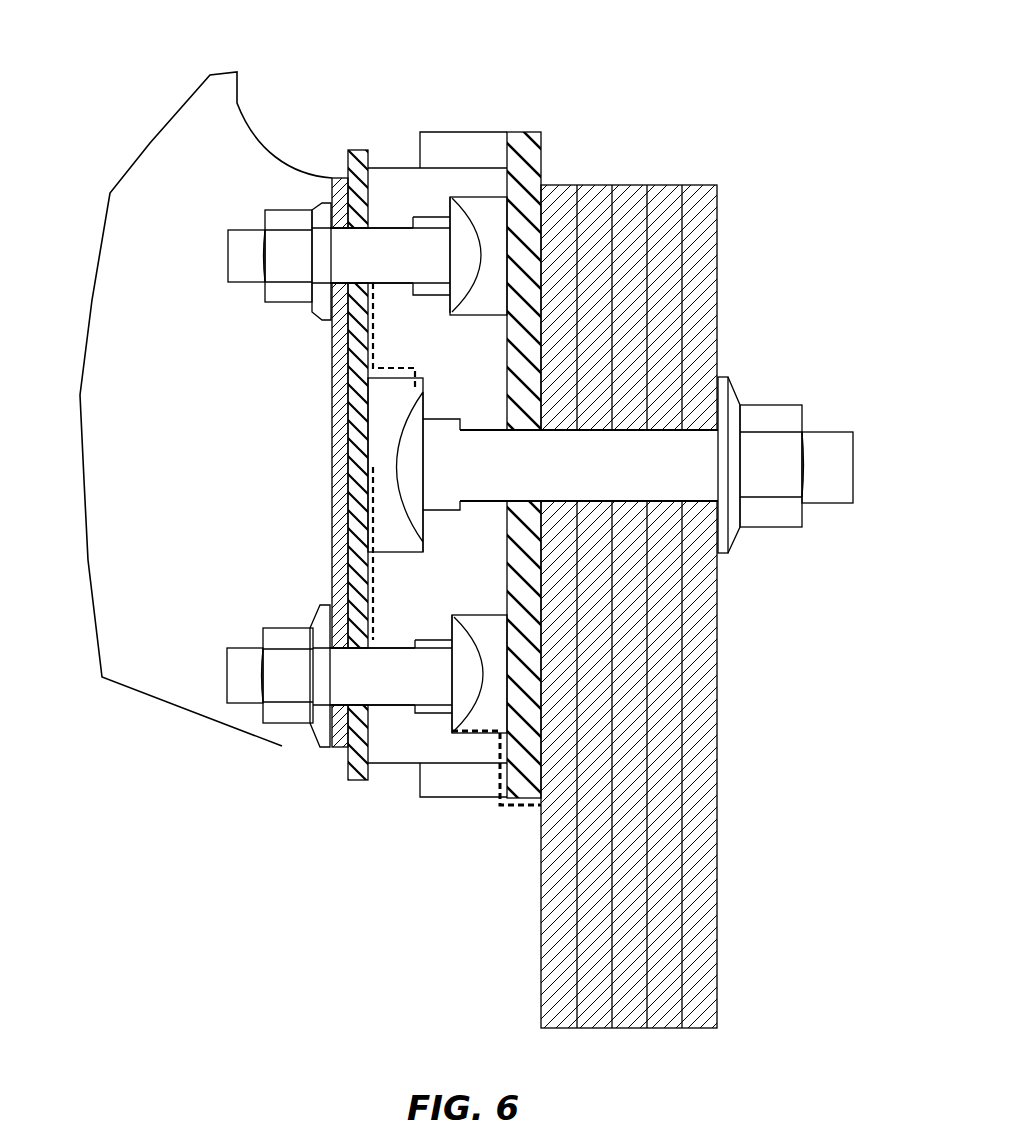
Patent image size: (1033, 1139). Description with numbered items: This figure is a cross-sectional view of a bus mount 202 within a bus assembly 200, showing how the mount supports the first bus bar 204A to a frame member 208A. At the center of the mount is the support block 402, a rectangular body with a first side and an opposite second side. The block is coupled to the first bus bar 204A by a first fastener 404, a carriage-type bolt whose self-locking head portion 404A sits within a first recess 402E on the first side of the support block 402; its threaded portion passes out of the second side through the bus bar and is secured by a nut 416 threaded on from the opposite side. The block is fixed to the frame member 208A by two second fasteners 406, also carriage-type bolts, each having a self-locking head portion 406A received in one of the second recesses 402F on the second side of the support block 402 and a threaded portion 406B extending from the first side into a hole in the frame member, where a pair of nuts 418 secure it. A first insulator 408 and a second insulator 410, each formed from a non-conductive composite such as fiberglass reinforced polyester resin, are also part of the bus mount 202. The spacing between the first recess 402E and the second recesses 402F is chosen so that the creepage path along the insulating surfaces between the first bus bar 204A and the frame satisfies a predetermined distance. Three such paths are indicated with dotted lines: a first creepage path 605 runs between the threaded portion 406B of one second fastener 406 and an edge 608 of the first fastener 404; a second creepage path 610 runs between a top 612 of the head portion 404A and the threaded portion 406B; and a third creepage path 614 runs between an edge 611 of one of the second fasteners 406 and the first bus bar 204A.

The mounting assembly 200 is at (662, 80).
The bus mount 202 is at (485, 110).
The first bus bar 204A is at (718, 190).
The housing 208A is at (152, 148).
The support block 402 is at (402, 167).
The first recess 402E is at (395, 532).
The second recesses 402F is at (485, 210).
The first fastener 404 is at (837, 503).
The head portion 404A is at (404, 411).
The second fasteners 406 is at (242, 230).
The head portion 406A is at (478, 290).
The threaded portion 406B is at (382, 287).
The first insulator 408 is at (357, 778).
The second insulator 410 is at (525, 132).
The nut 416 is at (790, 405).
The nuts 418 is at (298, 207).
The first creepage path 605 is at (357, 333).
The edge 608 is at (418, 392).
The second creepage path 610 is at (367, 577).
The edge 611 is at (450, 735).
The top 612 is at (383, 467).
The third creepage path 614 is at (520, 805).